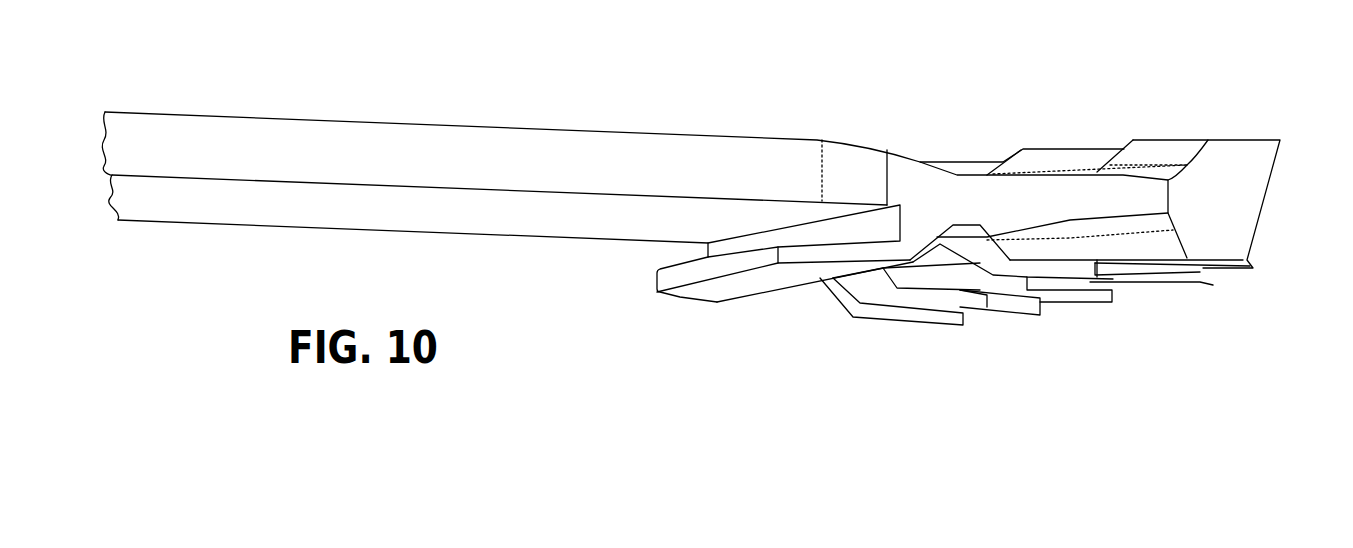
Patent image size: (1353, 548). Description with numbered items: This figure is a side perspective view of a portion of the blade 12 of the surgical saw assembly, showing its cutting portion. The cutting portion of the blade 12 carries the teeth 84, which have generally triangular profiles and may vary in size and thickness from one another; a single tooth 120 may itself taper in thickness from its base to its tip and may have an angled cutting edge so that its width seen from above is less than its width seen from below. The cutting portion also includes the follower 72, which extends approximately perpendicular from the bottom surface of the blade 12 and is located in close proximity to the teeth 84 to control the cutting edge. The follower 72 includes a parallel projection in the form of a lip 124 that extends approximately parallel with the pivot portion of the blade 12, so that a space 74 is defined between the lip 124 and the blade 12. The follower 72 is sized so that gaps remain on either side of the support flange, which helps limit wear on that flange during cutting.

The blade 12 is at (727, 118).
The space 74 is at (670, 255).
The lip 124 is at (700, 303).
The follower 72 is at (757, 297).
The tooth 120 is at (960, 323).
The teeth 84 is at (1200, 272).